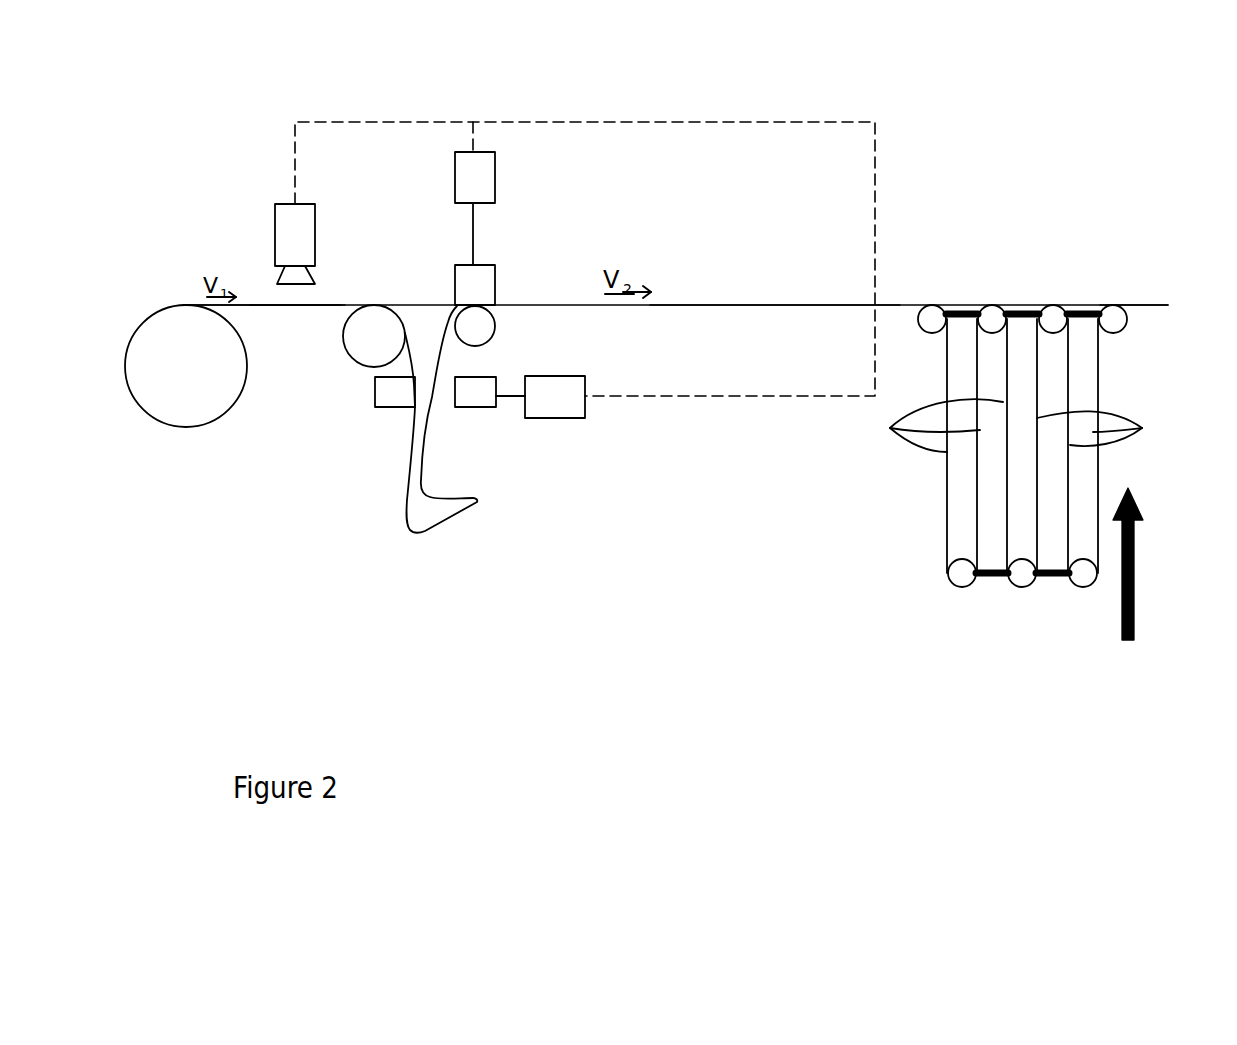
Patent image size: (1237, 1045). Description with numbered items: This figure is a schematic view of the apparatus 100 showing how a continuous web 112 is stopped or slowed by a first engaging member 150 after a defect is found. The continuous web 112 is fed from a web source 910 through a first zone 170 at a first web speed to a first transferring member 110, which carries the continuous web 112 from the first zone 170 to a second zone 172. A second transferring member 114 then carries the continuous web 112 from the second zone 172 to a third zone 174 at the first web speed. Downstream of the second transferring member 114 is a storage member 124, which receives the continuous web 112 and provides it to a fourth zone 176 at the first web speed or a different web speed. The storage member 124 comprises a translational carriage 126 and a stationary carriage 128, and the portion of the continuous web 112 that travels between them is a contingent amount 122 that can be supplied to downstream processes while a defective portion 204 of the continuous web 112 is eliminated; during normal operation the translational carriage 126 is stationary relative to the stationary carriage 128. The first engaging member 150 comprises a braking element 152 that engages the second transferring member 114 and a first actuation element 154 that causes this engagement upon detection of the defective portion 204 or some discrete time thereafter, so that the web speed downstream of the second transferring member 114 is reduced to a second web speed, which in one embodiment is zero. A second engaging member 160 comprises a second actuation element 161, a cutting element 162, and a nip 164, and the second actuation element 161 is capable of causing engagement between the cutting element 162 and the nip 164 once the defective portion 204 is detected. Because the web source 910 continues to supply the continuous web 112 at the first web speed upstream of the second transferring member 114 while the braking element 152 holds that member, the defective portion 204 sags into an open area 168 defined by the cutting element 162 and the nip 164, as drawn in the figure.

The apparatus 100 is at (1067, 130).
The first transferring member 110 is at (358, 343).
The continuous web 112 is at (332, 305).
The second transferring member 114 is at (483, 332).
The contingent amount 122 is at (1012, 425).
The storage member 124 is at (933, 498).
The translational carriage 126 is at (995, 577).
The stationary carriage 128 is at (1022, 307).
The first engaging member 150 is at (517, 210).
The braking element 152 is at (485, 292).
The first actuation element 154 is at (485, 182).
The second engaging member 160 is at (505, 435).
The second actuation element 161 is at (563, 405).
The cutting element 162 is at (483, 390).
The nip 164 is at (388, 395).
The open area 168 is at (443, 410).
The first zone 170 is at (280, 308).
The second zone 172 is at (418, 295).
The third zone 174 is at (777, 307).
The fourth zone 176 is at (1148, 308).
The defective portion 204 is at (400, 513).
The web source 910 is at (152, 395).